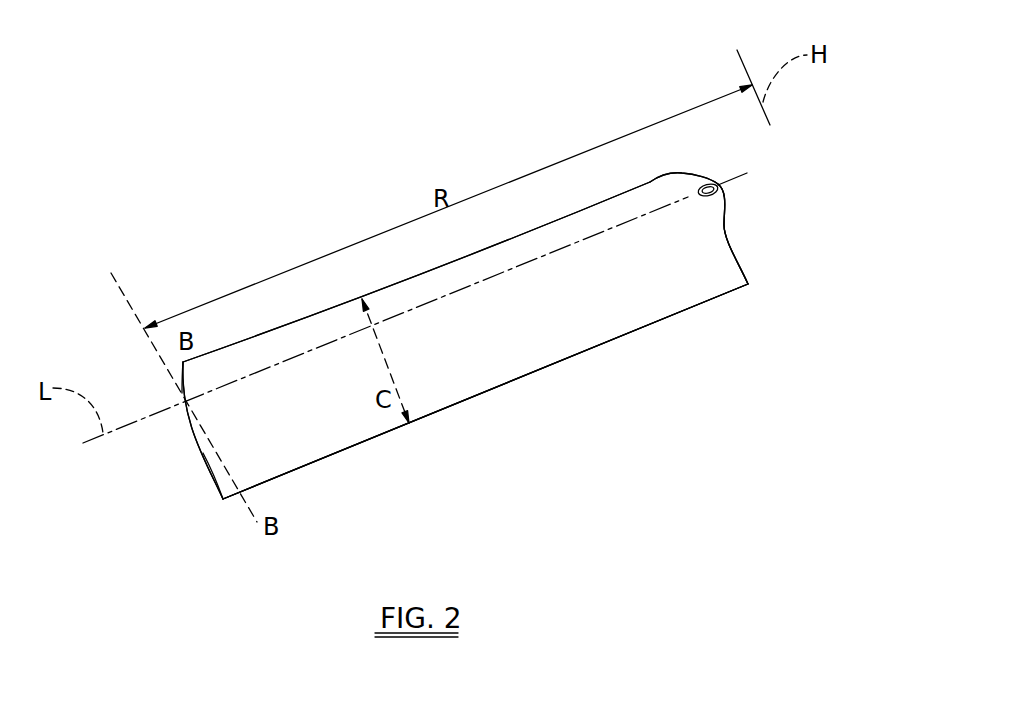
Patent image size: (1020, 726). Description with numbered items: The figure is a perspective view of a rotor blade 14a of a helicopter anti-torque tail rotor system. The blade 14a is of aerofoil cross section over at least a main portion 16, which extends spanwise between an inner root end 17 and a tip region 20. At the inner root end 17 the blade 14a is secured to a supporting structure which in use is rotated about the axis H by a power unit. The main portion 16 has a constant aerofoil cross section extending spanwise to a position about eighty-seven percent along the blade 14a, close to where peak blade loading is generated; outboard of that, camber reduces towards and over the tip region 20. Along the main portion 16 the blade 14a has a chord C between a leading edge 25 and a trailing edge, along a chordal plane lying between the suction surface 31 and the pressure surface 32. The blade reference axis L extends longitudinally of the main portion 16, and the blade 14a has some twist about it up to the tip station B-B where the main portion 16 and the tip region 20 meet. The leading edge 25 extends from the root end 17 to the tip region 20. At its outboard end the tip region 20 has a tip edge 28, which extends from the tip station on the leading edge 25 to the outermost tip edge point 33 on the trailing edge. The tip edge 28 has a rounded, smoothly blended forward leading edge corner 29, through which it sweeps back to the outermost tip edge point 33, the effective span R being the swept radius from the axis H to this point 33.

The rotor blade 14a is at (437, 427).
The main portion 16 is at (385, 320).
The inner root end 17 is at (752, 208).
The tip region 20 is at (210, 451).
The leading edge 25 is at (405, 280).
The tip edge 28 is at (217, 480).
The forward leading edge corner 29 is at (178, 377).
The suction surface 31 is at (710, 275).
The pressure surface 32 is at (517, 363).
The outermost tip edge point 33 is at (223, 502).